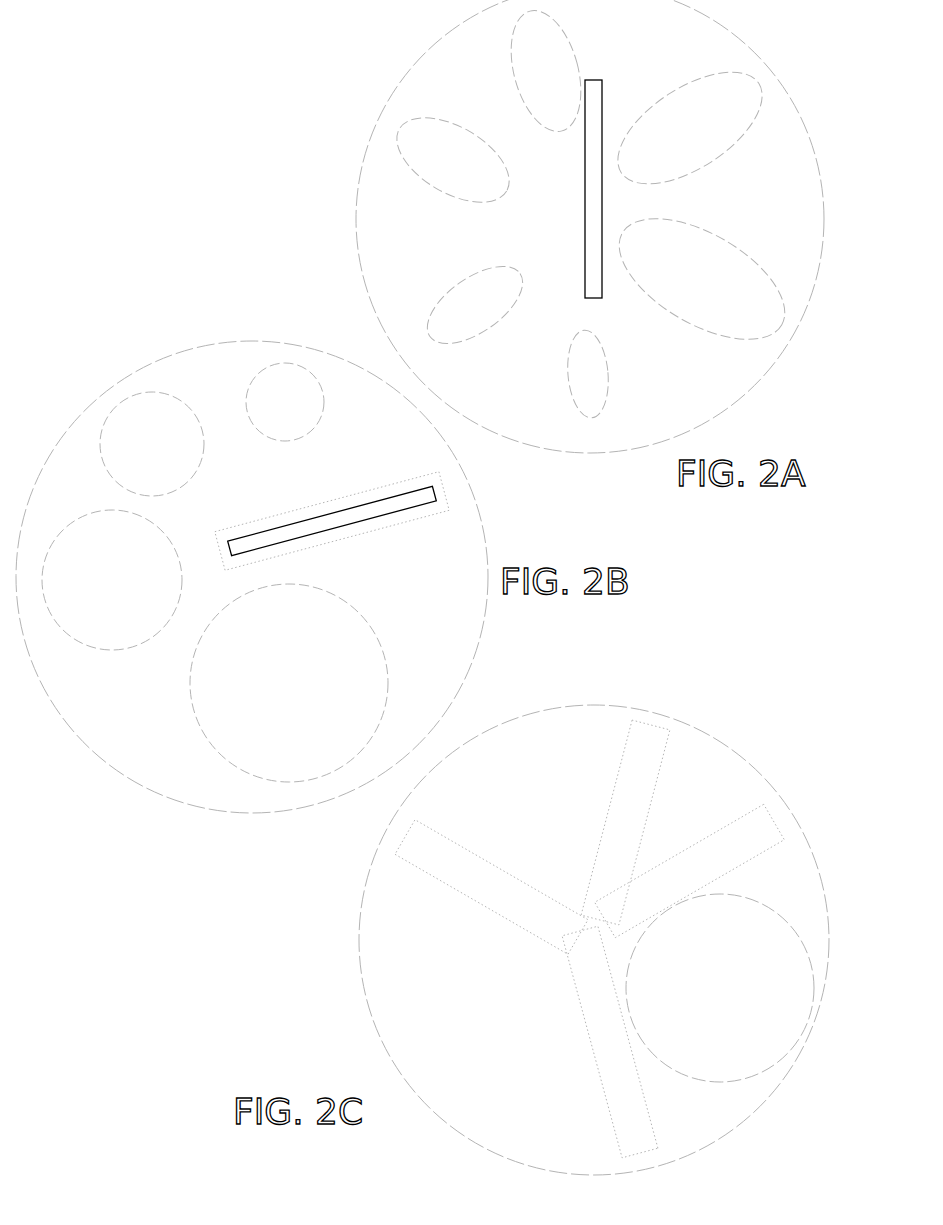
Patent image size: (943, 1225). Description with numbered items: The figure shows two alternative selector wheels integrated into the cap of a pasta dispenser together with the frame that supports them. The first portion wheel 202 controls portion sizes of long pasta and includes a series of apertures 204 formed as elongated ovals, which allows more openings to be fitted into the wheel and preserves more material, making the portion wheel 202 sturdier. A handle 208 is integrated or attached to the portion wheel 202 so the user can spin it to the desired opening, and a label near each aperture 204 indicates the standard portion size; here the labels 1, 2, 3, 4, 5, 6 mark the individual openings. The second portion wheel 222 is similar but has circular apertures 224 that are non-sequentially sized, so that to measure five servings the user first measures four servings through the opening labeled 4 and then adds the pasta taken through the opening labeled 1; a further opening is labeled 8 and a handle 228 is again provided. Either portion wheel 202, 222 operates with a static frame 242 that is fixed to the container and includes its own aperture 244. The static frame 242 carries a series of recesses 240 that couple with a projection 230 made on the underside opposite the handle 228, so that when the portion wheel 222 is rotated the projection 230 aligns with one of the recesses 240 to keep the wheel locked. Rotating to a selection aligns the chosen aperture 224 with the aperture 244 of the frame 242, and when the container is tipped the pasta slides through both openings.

In FIG. 2A, the portion wheel 202 is at (412, 218).
In FIG. 2A, the apertures 204 is at (532, 48).
In FIG. 2A, the handle 208 is at (602, 211).
In FIG. 2A, the portion size label 1 is at (597, 373).
In FIG. 2B, the portion size label 1 is at (306, 453).
In FIG. 2A, the portion size label 2 is at (474, 304).
In FIG. 2B, the portion size label 2 is at (218, 511).
In FIG. 2A, the portion size label 3 is at (453, 159).
In FIG. 2A, the portion size label 4 is at (500, 80).
In FIG. 2B, the portion size label 4 is at (112, 594).
In FIG. 2A, the portion size label 5 is at (689, 128).
In FIG. 2A, the portion size label 6 is at (702, 279).
In FIG. 2B, the portion size label 8 is at (305, 683).
In FIG. 2B, the portion wheel 222 is at (452, 632).
In FIG. 2B, the circular apertures 224 is at (278, 418).
In FIG. 2B, the handle 228 is at (382, 518).
In FIG. 2B, the projection 230 is at (442, 483).
In FIG. 2C, the recesses 240 is at (595, 1007).
In FIG. 2C, the static frame 242 is at (390, 1035).
In FIG. 2C, the aperture 244 is at (720, 988).